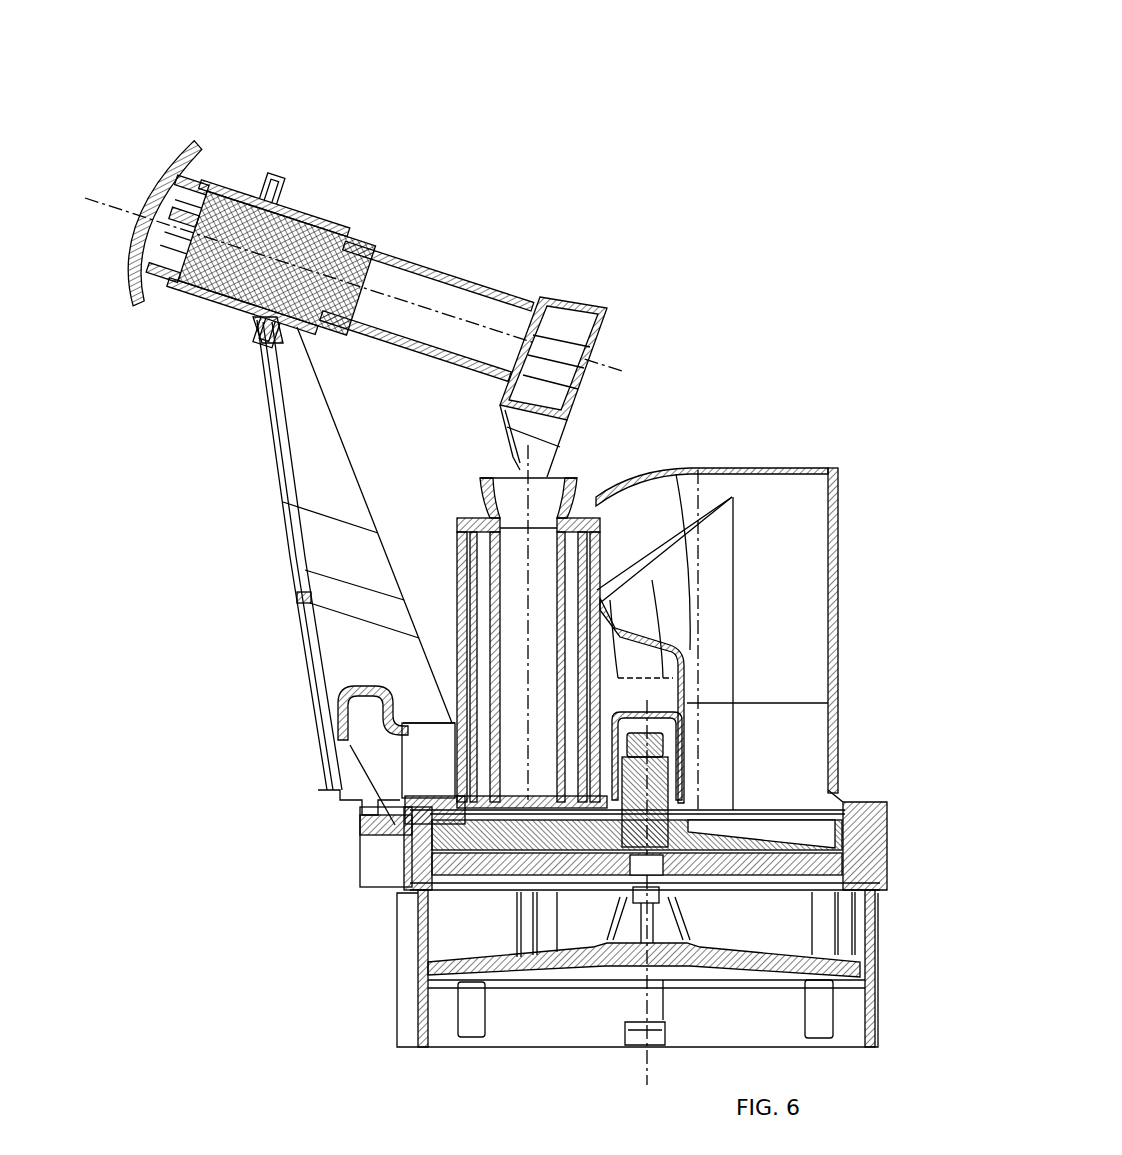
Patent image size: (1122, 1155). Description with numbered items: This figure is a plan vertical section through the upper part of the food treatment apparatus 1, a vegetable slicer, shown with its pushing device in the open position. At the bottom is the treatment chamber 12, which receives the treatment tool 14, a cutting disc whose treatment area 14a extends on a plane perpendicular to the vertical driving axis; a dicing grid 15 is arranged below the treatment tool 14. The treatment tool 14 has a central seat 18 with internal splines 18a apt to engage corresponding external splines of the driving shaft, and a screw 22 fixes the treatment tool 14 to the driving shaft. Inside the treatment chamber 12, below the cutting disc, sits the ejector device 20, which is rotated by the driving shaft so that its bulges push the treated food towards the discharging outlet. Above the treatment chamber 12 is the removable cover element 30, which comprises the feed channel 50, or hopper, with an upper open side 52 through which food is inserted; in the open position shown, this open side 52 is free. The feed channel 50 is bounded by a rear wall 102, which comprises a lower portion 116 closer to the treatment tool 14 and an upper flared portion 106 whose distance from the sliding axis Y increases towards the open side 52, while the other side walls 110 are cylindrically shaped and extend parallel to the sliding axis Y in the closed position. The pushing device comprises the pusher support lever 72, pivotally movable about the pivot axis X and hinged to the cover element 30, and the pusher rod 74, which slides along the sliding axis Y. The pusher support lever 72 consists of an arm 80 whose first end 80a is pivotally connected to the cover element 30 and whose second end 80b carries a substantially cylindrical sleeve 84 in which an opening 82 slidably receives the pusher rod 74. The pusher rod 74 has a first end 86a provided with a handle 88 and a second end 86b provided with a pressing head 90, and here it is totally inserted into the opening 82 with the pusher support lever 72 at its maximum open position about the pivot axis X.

The food treatment apparatus 1 is at (762, 80).
The treatment chamber 12 is at (440, 908).
The treatment tool 14 is at (848, 830).
The treatment area 14a is at (790, 850).
The dicing grid 15 is at (346, 872).
The central seat 18 is at (684, 788).
The internal splines 18a is at (682, 810).
The ejector device 20 is at (430, 963).
The screw 22 is at (689, 730).
The cover element 30 is at (210, 818).
The feed channel 50 is at (860, 410).
The upper open side 52 is at (778, 468).
The pusher support lever 72 is at (160, 528).
The pusher rod 74 is at (489, 118).
The arm 80 is at (292, 483).
The first end 80a is at (274, 680).
The second end 80b is at (225, 360).
The opening 82 is at (212, 293).
The cylindrical sleeve 84 is at (322, 215).
The first end 86a is at (282, 130).
The second end 86b is at (575, 270).
The handle 88 is at (183, 140).
The pressing head 90 is at (608, 316).
The rear wall 102 is at (603, 552).
The flared portion 106 is at (645, 612).
The side walls 110 is at (838, 578).
The lower portion 116 is at (689, 695).
The pivot axis X is at (362, 710).
The sliding axis Y is at (100, 203).